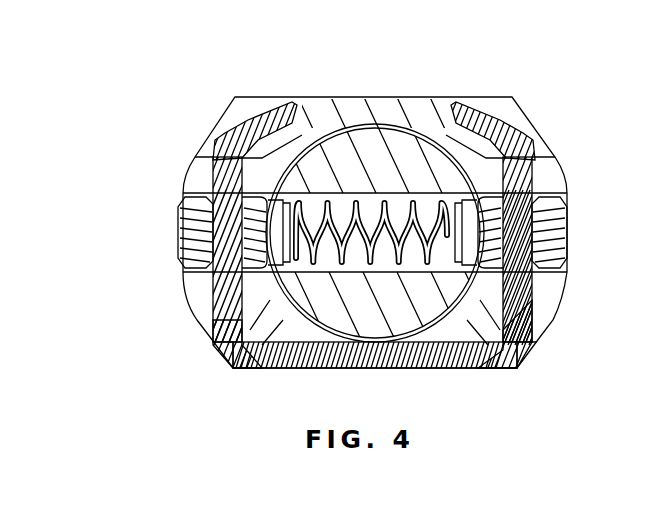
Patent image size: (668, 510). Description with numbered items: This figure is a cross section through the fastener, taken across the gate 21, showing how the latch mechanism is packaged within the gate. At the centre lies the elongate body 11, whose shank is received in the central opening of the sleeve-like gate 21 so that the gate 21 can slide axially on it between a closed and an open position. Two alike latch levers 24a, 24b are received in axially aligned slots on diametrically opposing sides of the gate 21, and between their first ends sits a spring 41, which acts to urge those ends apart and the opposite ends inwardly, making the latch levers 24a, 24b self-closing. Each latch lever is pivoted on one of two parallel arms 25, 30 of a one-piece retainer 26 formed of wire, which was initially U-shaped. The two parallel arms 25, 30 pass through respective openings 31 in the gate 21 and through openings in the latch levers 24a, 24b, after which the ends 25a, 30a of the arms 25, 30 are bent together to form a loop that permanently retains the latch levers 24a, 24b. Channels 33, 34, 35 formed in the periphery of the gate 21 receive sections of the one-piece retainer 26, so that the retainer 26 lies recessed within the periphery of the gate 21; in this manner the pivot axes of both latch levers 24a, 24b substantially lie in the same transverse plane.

The elongate body 11 is at (360, 137).
The gate 21 is at (548, 180).
The latch lever 24a is at (192, 230).
The latch lever 24b is at (557, 230).
The arm 25 is at (547, 180).
The end of arm 25a is at (463, 112).
The one-piece retainer 26 is at (433, 358).
The arm 30 is at (232, 183).
The end of arm 30a is at (273, 120).
The opening 31 is at (217, 330).
The channel 33 is at (230, 117).
The channel 34 is at (513, 116).
The channel 35 is at (500, 363).
The spring 41 is at (394, 265).